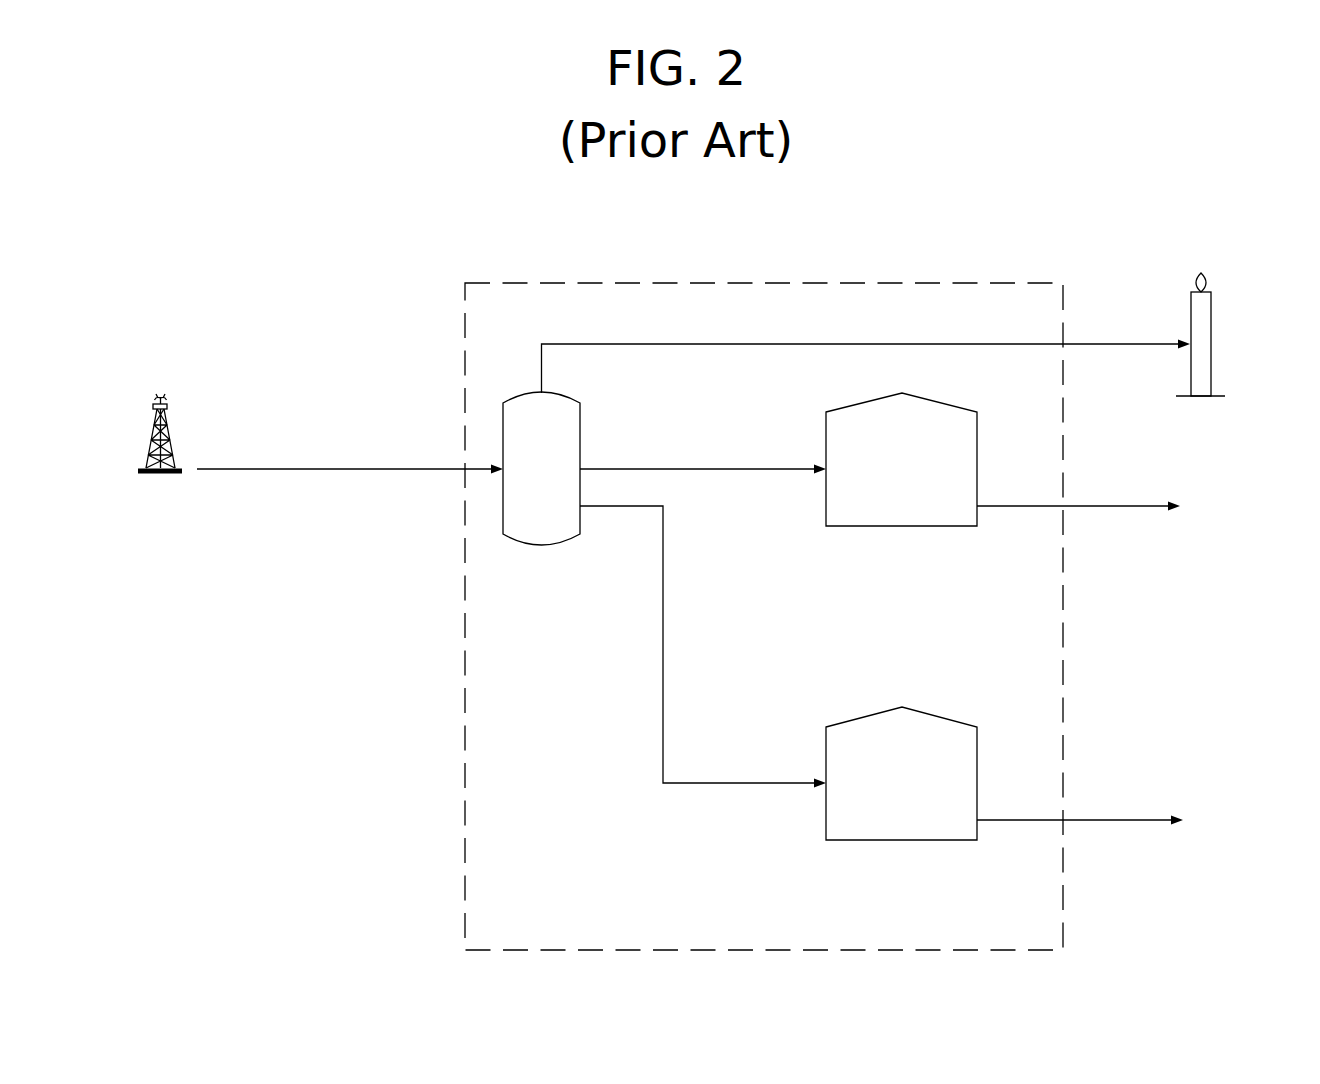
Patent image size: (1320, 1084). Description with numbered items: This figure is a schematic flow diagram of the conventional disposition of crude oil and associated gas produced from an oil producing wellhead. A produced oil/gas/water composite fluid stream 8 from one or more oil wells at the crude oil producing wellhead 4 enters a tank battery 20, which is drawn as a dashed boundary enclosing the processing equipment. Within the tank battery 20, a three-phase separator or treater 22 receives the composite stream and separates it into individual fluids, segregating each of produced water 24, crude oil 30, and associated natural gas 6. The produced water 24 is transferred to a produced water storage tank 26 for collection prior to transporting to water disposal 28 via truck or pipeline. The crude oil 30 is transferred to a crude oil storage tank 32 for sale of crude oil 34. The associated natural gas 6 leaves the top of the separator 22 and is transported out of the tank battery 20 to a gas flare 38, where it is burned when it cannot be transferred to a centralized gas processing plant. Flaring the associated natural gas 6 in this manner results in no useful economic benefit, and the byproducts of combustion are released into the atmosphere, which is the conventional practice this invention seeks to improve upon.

The crude oil producing wellhead 4 is at (160, 450).
The produced oil/gas/water composite fluid stream 8 is at (394, 469).
The tank battery 20 is at (486, 280).
The 3-phase separator 22 is at (530, 483).
The associated natural gas 6 is at (596, 344).
The crude oil 30 is at (652, 469).
The crude oil storage tank 32 is at (890, 483).
The sale of crude oil 34 is at (1115, 506).
The produced water 24 is at (698, 783).
The produced water storage tank 26 is at (890, 798).
The water disposal 28 is at (1118, 820).
The gas flare 38 is at (1211, 383).